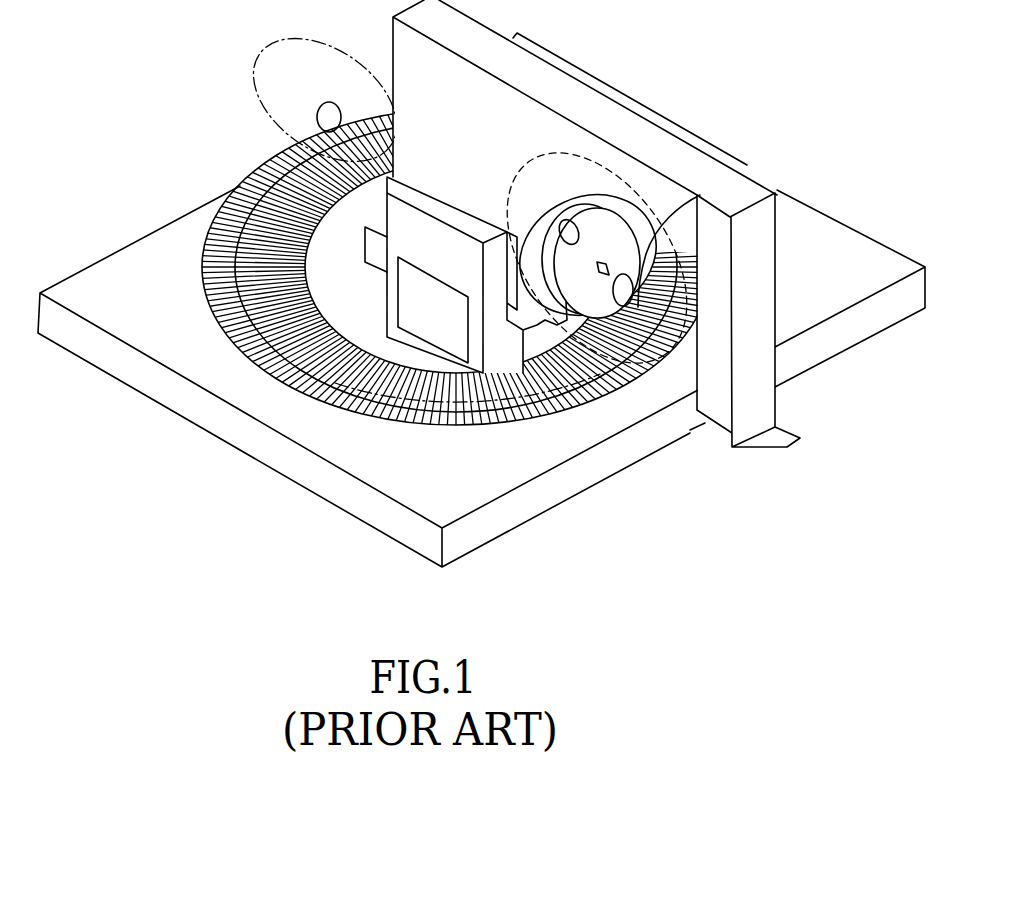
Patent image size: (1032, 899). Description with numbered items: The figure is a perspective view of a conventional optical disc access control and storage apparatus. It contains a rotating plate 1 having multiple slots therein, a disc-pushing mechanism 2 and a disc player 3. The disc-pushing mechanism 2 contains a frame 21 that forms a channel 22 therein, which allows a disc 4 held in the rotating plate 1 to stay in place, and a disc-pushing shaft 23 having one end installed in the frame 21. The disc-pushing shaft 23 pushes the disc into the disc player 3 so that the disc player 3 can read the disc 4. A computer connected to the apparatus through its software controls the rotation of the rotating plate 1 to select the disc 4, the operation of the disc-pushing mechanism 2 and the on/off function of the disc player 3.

The rotating plate 1 is at (507, 412).
The disc-pushing mechanism 2 is at (652, 127).
The disc player 3 is at (417, 238).
The disc 4 is at (515, 156).
The frame 21 is at (757, 298).
The channel 22 is at (630, 321).
The disc-pushing shaft 23 is at (700, 194).